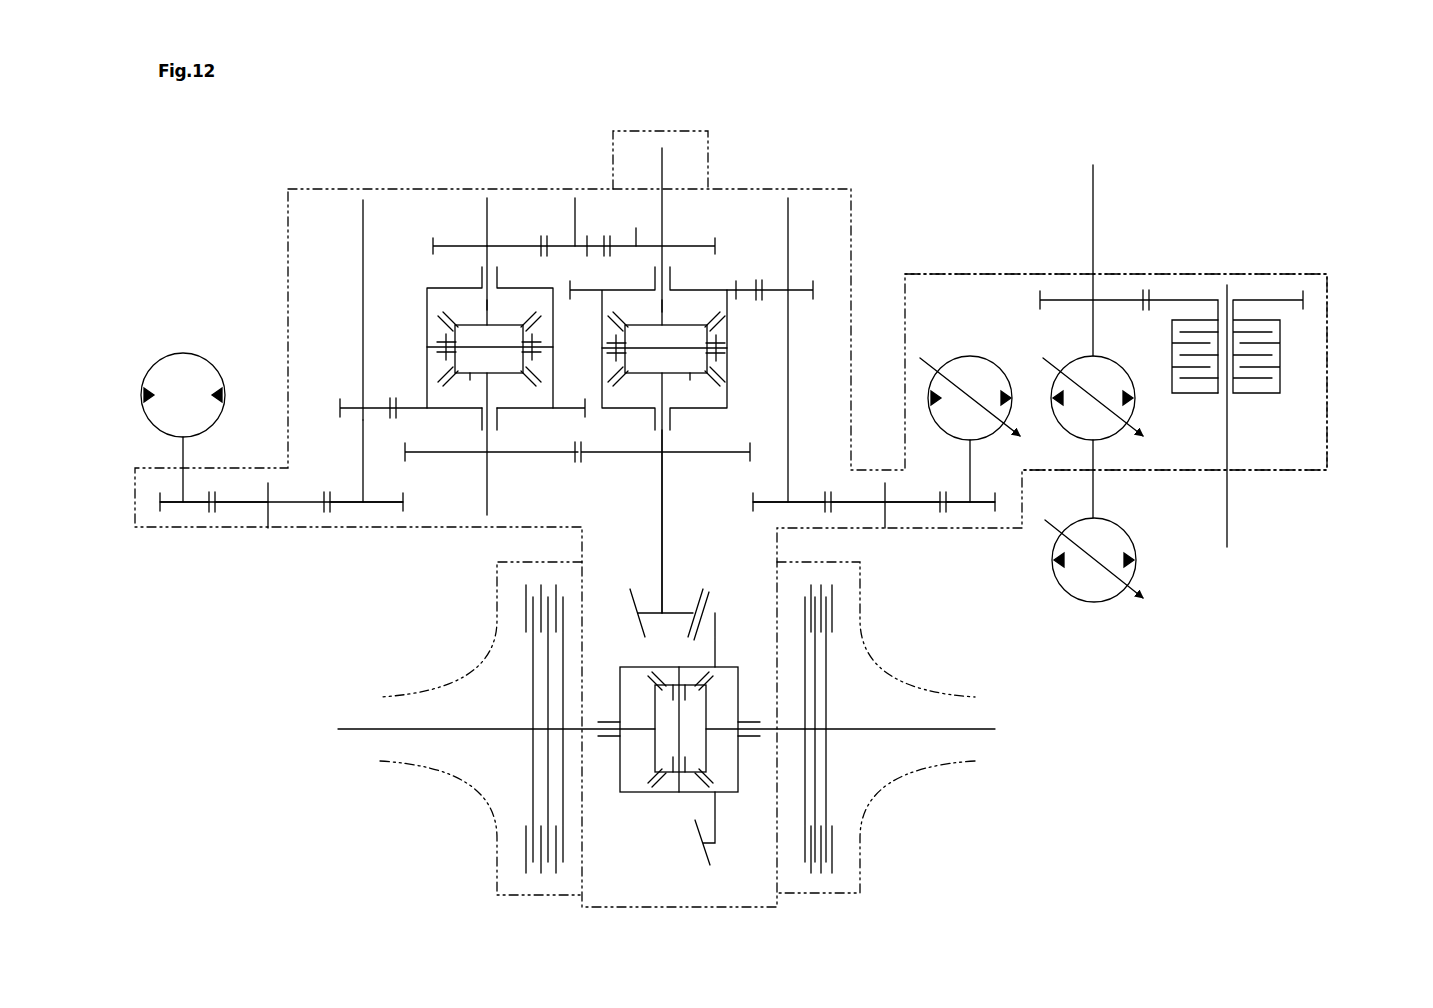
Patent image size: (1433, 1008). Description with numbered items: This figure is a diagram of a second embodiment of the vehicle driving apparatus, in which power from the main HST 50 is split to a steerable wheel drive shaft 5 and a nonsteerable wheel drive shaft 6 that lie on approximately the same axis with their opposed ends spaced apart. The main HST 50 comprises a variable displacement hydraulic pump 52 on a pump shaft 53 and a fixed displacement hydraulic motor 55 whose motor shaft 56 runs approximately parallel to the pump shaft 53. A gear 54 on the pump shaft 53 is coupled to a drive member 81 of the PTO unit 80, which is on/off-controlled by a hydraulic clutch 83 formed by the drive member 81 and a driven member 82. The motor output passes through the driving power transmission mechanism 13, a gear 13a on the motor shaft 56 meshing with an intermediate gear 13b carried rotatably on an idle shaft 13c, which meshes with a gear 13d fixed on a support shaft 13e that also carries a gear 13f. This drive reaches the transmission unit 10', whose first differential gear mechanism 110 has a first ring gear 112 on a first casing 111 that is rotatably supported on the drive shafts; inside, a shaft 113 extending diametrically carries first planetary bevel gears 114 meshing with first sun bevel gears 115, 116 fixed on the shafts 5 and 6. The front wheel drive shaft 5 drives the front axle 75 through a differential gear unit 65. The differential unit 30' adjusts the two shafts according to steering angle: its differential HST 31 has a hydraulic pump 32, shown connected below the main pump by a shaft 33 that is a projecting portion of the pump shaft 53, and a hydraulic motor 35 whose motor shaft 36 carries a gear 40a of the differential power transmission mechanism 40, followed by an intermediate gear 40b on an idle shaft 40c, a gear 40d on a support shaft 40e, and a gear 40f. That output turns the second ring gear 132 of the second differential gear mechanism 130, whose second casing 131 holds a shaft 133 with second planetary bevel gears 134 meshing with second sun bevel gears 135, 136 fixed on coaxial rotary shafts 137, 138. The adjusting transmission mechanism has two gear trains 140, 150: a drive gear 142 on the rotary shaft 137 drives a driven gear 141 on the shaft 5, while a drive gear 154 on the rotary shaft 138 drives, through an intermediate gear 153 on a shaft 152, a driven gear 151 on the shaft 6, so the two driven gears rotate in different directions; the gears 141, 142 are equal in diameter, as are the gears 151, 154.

The steerable wheel drive shaft 5 is at (668, 542).
The nonsteerable wheel drive shaft 6 is at (662, 165).
The transmission unit 10' is at (1116, 292).
The driving power transmission mechanism 13 is at (948, 588).
The gear 13a is at (955, 500).
The intermediate gear 13b is at (920, 500).
The idle shaft 13c is at (885, 520).
The gear 13d is at (775, 500).
The support shaft 13e is at (788, 235).
The gear 13f is at (800, 288).
The differential unit 30' is at (731, 525).
The differential HST 31 is at (130, 275).
The hydraulic pump 32 is at (1132, 614).
The motor shaft 33 is at (1095, 490).
The hydraulic motor 35 is at (160, 352).
The motor shaft 36 is at (183, 455).
The differential power transmission mechanism 40 is at (195, 598).
The gear 40a is at (175, 505).
The intermediate gear 40b is at (238, 505).
The idle shaft 40c is at (275, 520).
The gear 40d is at (338, 505).
The support shaft 40e is at (363, 432).
The gear 40f is at (363, 400).
The main HST 50 is at (1015, 230).
The hydraulic pump 52 is at (1046, 352).
The pump shaft 53 is at (1095, 205).
The gear 54 is at (1108, 300).
The hydraulic motor 55 is at (968, 350).
The motor shaft 56 is at (975, 445).
The differential gear unit 65 is at (643, 812).
The front axle 75 is at (365, 728).
The PTO unit 80 is at (1258, 435).
The drive member 81 is at (1312, 298).
The driven member 82 is at (1283, 385).
The hydraulic clutch 83 is at (1387, 312).
The first differential gear mechanism 110 is at (745, 245).
The first casing 111 is at (728, 332).
The first ring gear 112 is at (742, 290).
The shaft 113 is at (716, 348).
The first planetary bevel gears 114 is at (708, 363).
The first sun bevel gear 115 is at (690, 378).
The first sun bevel gear 116 is at (678, 312).
The second differential gear mechanism 130 is at (420, 270).
The second casing 131 is at (433, 370).
The second ring gear 132 is at (408, 405).
The shaft 133 is at (440, 345).
The second planetary bevel gears 134 is at (435, 315).
The second sun bevel gear 135 is at (465, 378).
The second sun bevel gear 136 is at (462, 320).
The rotary shaft 137 is at (490, 440).
The rotary shaft 138 is at (492, 305).
The gear train 140 is at (572, 488).
The driven gear 141 is at (640, 455).
The drive gear 142 is at (555, 455).
The gear train 150 is at (505, 136).
The driven gear 151 is at (636, 244).
The shaft 152 is at (573, 232).
The intermediate gear 153 is at (587, 243).
The drive gear 154 is at (505, 243).